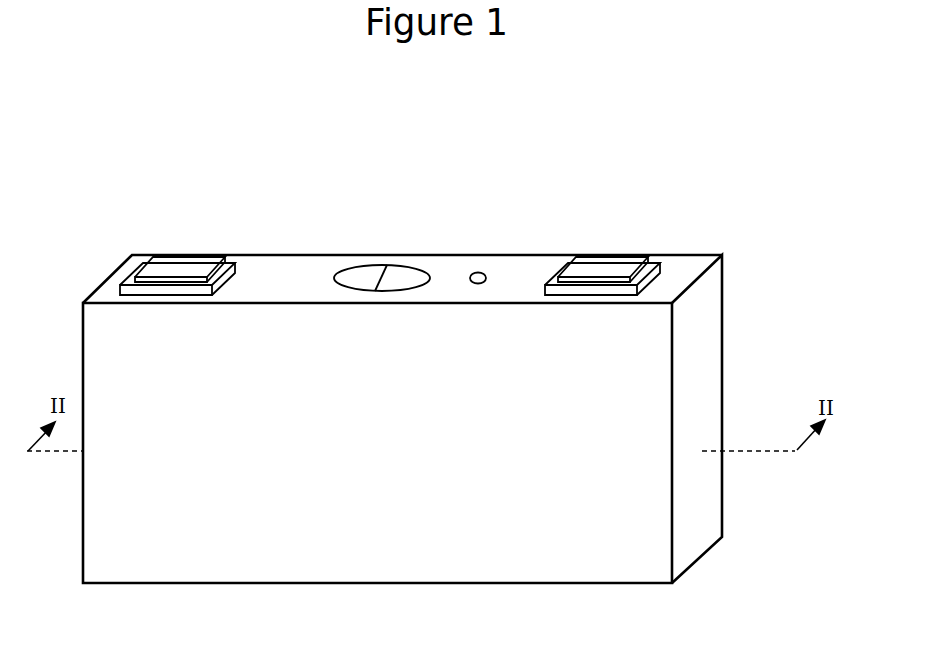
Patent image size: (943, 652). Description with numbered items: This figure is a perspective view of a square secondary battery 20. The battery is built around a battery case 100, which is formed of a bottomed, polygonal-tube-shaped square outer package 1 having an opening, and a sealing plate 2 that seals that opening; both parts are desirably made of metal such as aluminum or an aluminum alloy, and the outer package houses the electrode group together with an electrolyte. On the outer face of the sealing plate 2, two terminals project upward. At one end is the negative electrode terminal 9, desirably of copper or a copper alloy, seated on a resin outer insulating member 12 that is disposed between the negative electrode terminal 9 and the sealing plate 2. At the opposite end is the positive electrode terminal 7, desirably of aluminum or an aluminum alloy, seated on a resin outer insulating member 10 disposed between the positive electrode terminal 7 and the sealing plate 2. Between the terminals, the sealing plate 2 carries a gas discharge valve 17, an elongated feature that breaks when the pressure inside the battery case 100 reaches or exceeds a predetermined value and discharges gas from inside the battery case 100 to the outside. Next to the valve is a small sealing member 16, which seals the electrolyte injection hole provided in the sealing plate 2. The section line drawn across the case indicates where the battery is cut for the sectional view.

The battery case 100 is at (770, 179).
The square outer package 1 is at (705, 342).
The sealing plate 2 is at (680, 265).
The square secondary battery 20 is at (239, 97).
The negative electrode terminal 9 is at (188, 268).
The resin outer insulating member 12 is at (140, 268).
The positive electrode terminal 7 is at (617, 267).
The resin outer insulating member 10 is at (550, 287).
The gas discharge valve 17 is at (395, 275).
The sealing member 16 is at (482, 275).